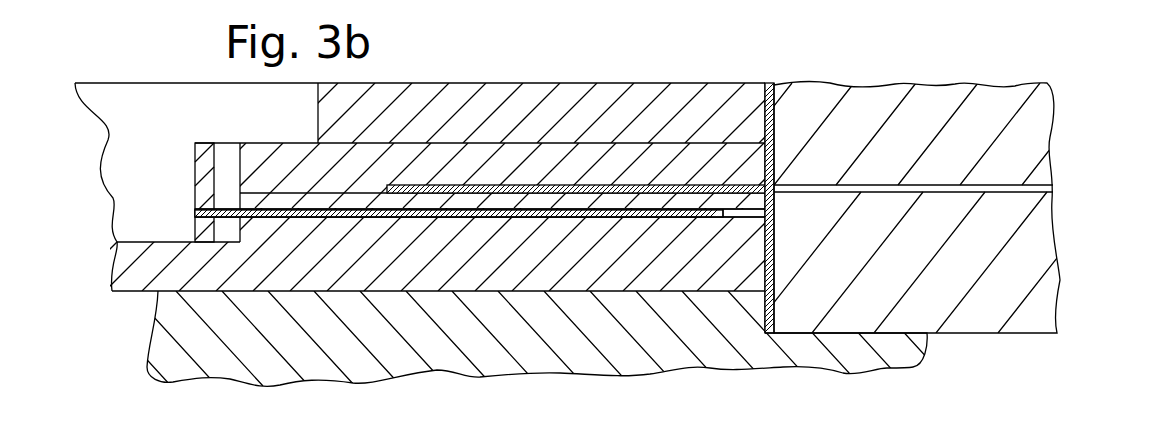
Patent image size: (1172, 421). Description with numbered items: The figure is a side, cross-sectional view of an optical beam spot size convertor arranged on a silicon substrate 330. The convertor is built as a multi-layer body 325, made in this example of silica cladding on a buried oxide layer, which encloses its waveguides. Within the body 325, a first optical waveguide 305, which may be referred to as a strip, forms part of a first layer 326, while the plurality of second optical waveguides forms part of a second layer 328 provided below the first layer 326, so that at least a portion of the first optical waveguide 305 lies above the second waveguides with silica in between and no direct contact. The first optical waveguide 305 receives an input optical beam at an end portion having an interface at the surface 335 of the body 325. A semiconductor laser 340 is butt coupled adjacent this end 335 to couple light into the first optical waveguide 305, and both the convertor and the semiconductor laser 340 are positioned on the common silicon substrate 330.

The first optical waveguide 305 is at (592, 185).
The body 325 is at (669, 70).
The first layer 326 is at (202, 183).
The second layer 328 is at (195, 211).
The silicon substrate 330 is at (202, 341).
The surface (end) of the body 335 is at (773, 128).
The semiconductor laser 340 is at (1020, 143).